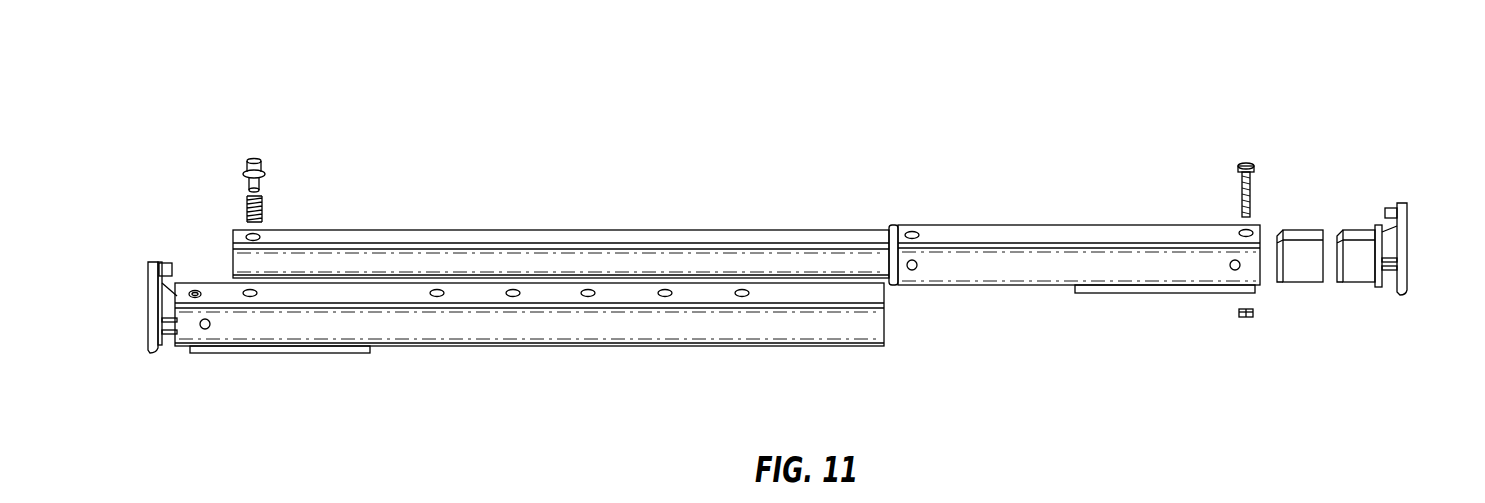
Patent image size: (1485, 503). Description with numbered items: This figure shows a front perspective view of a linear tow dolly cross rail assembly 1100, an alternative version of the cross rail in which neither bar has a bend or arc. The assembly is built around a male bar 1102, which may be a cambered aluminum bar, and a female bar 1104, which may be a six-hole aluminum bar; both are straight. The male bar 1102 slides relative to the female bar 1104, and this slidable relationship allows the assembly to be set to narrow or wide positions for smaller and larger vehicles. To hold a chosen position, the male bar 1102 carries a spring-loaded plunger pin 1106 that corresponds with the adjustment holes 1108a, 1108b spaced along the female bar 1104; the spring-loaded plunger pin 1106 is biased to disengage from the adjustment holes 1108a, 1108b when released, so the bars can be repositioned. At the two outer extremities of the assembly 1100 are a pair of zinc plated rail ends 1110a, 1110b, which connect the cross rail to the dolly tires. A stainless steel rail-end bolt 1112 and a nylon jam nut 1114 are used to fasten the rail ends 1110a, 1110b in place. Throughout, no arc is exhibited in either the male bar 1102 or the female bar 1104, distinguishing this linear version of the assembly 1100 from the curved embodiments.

The linear tow dolly cross rail assembly 1100 is at (281, 56).
The male bar 1102 is at (794, 206).
The female bar 1104 is at (523, 368).
The spring-loaded plunger pin 1106 is at (257, 160).
The adjustment hole 1108a is at (250, 289).
The adjustment hole 1108b is at (740, 289).
The rail end 1110a is at (155, 262).
The rail end 1110b is at (1404, 203).
The rail-end bolt 1112 is at (1240, 166).
The jam nut 1114 is at (1240, 318).